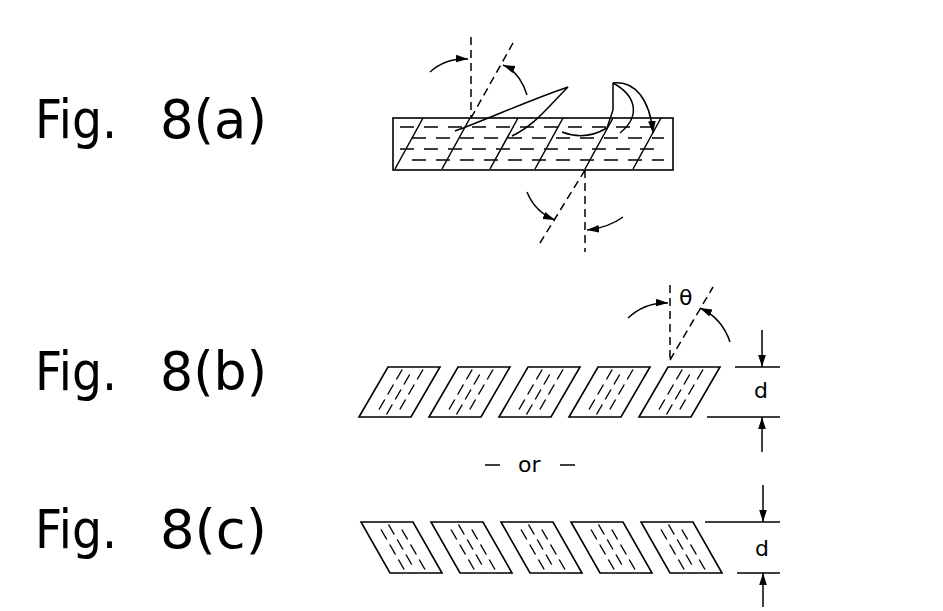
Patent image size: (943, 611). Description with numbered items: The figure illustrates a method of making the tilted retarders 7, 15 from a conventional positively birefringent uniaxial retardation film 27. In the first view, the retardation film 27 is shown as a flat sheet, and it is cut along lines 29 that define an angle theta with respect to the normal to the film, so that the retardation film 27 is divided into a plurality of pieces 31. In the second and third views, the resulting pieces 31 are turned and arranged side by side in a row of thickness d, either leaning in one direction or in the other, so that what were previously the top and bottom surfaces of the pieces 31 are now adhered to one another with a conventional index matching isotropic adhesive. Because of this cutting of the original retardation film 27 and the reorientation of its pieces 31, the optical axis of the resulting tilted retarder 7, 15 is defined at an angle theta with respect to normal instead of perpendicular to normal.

In FIG. 8A, the positively birefringent uniaxial retardation film 27 is at (703, 145).
In FIG. 8A, the cutting lines 29 is at (554, 105).
In FIG. 8B, the pieces 31 is at (635, 367).
In FIG. 8C, the pieces 31 is at (678, 522).
In FIG. 8B, the tilted retarder 7 is at (266, 457).
In FIG. 8B, the tilted retarder 15 is at (367, 432).